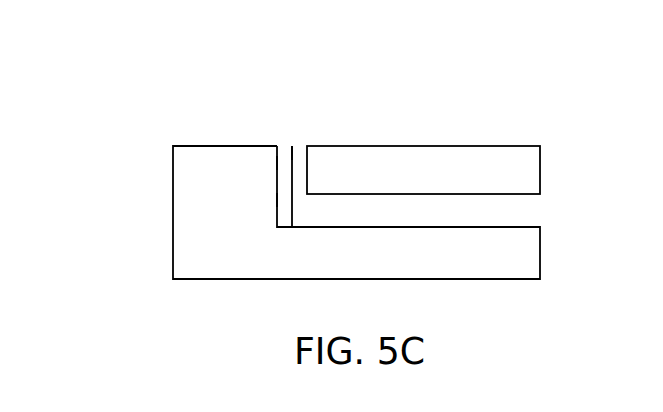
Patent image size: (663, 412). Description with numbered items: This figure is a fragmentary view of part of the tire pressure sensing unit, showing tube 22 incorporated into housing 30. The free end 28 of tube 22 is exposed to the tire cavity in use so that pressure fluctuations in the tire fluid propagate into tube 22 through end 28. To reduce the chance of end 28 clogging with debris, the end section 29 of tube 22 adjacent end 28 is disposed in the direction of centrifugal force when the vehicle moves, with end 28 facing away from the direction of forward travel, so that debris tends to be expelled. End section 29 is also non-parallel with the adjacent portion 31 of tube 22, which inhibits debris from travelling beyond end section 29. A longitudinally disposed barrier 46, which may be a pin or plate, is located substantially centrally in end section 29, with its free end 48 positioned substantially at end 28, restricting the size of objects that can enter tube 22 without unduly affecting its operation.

The tube 22 is at (463, 226).
The free end 28 is at (285, 150).
The end section 29 is at (278, 200).
The housing 30 is at (184, 203).
The adjacent portion 31 is at (410, 208).
The barrier 46 is at (278, 163).
The free end of barrier 48 is at (291, 150).